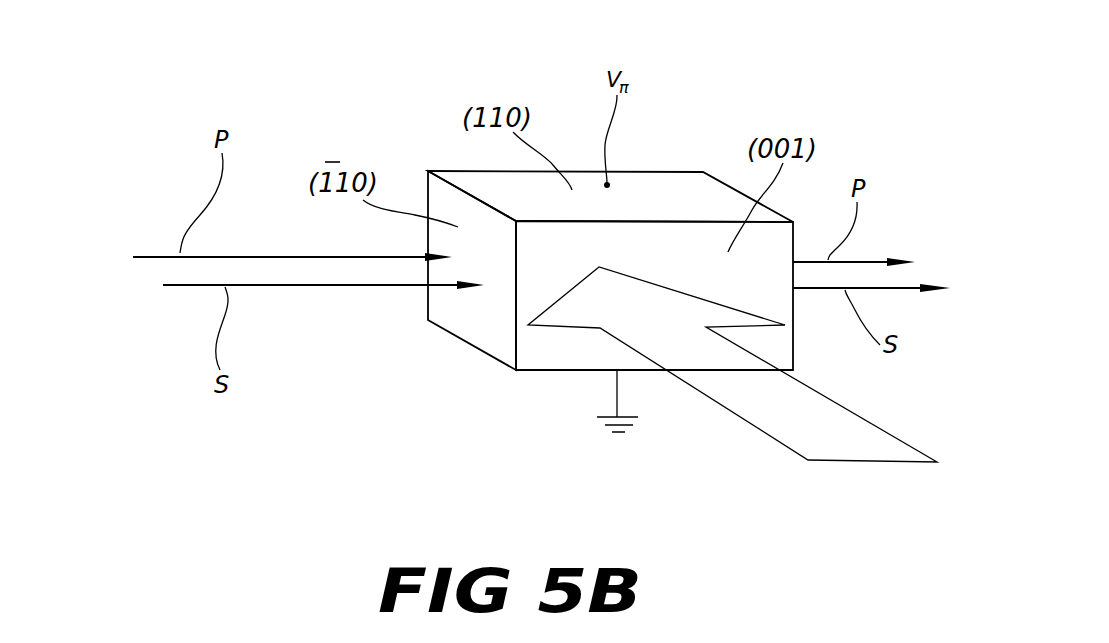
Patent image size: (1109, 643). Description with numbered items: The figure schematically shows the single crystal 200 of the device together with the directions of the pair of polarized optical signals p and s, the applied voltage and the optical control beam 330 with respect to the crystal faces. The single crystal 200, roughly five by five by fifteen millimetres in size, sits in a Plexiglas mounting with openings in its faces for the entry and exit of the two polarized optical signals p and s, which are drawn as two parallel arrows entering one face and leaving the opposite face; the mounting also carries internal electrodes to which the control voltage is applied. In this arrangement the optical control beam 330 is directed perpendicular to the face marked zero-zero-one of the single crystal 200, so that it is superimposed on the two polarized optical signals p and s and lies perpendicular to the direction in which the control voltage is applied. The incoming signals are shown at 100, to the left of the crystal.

The input light beams 100 is at (316, 318).
The single crystal 200 is at (669, 150).
The optical control beam 330 is at (793, 427).